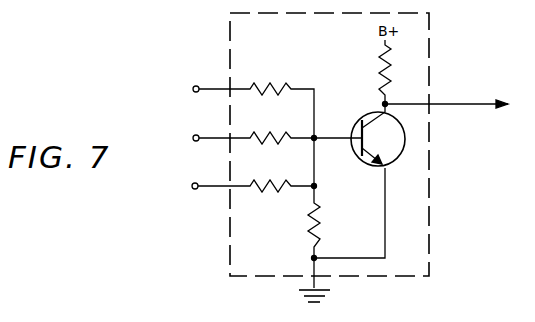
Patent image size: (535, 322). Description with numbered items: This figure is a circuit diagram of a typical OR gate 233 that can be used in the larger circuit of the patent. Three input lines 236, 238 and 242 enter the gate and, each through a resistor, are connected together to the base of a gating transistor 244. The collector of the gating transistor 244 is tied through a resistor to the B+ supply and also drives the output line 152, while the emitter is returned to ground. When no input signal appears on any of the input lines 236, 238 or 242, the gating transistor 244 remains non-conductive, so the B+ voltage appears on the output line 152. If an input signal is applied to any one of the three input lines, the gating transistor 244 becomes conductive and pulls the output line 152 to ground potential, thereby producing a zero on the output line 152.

The OR gate 233 is at (432, 38).
The input line 236 is at (212, 88).
The input line 238 is at (210, 137).
The input line 242 is at (213, 185).
The gating transistor 244 is at (356, 119).
The output line 152 is at (471, 97).